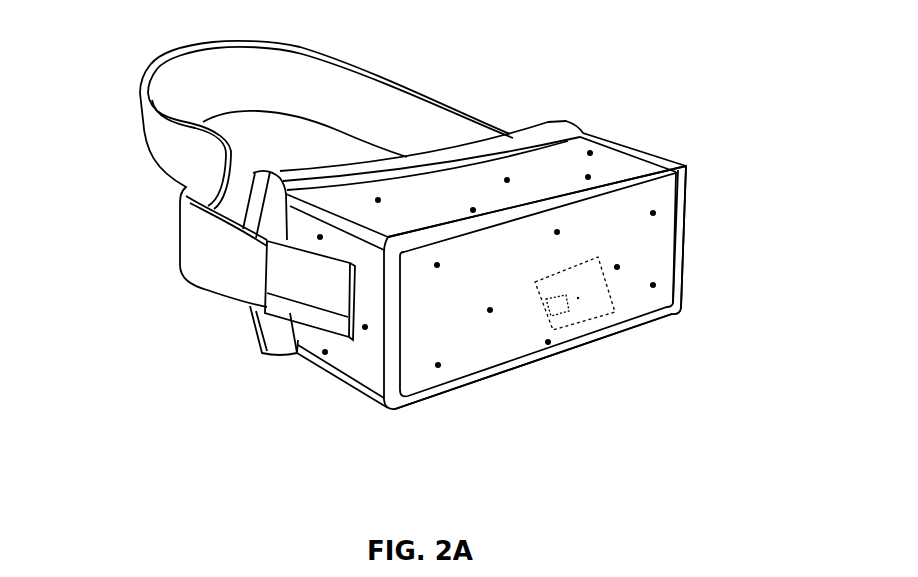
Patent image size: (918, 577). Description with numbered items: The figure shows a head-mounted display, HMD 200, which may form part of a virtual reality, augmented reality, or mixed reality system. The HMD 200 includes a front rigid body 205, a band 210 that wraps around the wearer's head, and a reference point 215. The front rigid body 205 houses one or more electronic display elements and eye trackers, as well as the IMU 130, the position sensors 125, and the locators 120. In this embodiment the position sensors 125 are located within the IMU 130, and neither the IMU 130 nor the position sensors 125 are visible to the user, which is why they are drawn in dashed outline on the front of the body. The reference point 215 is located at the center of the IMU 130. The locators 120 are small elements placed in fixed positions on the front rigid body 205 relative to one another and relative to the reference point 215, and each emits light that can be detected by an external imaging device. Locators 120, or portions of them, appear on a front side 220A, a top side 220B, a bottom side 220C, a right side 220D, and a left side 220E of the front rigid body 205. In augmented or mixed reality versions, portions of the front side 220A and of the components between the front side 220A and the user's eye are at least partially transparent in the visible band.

The HMD 200 is at (66, 45).
The band 210 is at (420, 97).
The front rigid body 205 is at (681, 163).
The front side 220A is at (426, 390).
The top side 220B is at (343, 199).
The bottom side 220C is at (316, 388).
The right side 220D is at (355, 362).
The left side 220E is at (660, 148).
The locators 120 is at (665, 281).
The position sensors 125 is at (553, 321).
The IMU 130 is at (626, 312).
The reference point 215 is at (583, 313).